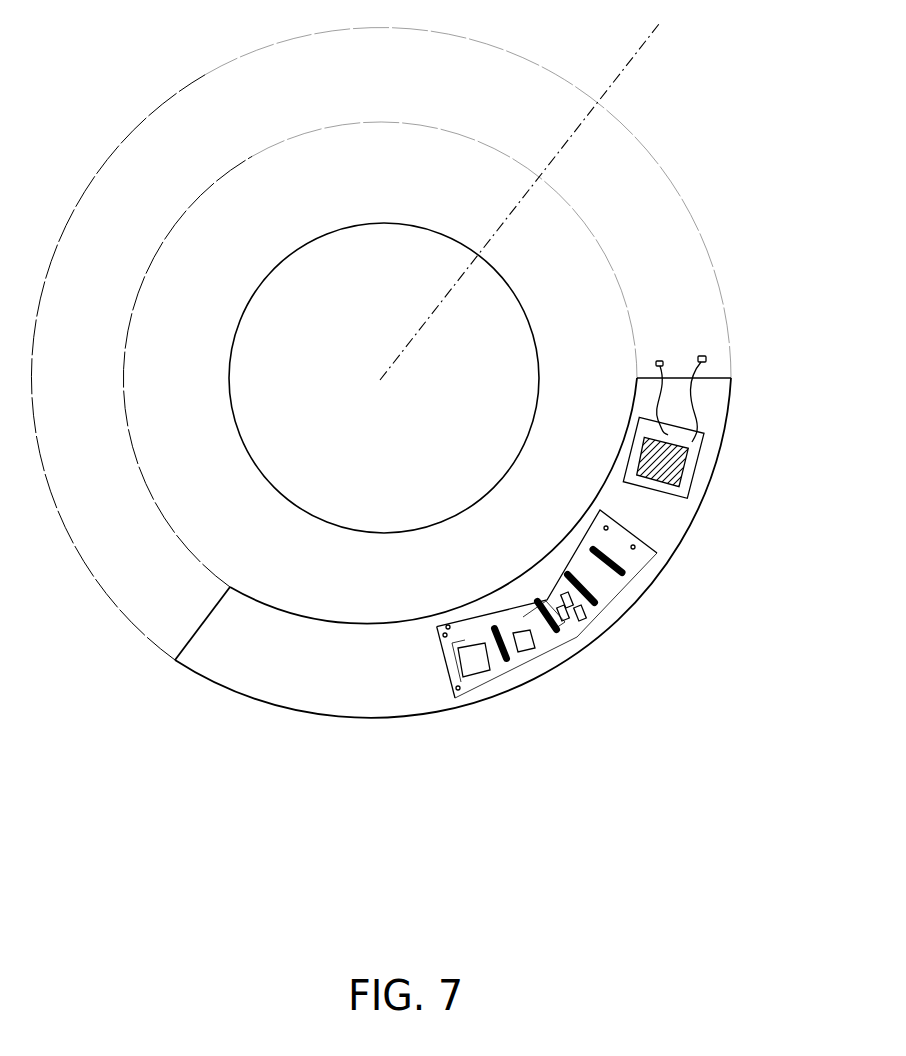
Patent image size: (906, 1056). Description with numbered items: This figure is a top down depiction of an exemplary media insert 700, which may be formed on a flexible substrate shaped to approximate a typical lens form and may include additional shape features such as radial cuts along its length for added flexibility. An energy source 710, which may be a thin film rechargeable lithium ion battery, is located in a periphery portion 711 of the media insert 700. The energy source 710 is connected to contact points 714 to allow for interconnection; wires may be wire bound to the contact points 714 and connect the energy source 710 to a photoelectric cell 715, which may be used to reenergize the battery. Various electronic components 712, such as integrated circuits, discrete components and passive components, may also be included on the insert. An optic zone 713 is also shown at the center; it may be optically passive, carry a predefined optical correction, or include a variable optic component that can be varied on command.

The media insert 700 is at (150, 131).
The energy source 710 is at (688, 462).
The periphery portion 711 is at (453, 475).
The electronic components 712 is at (571, 660).
The optic zone 713 is at (547, 192).
The contact points 714 is at (681, 387).
The photoelectric cell 715 is at (482, 673).